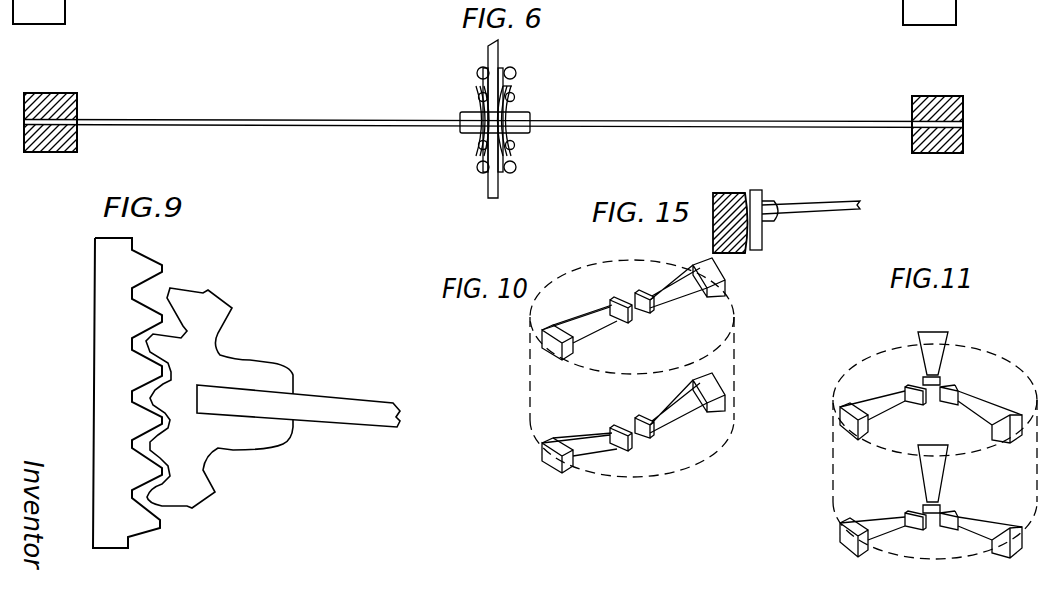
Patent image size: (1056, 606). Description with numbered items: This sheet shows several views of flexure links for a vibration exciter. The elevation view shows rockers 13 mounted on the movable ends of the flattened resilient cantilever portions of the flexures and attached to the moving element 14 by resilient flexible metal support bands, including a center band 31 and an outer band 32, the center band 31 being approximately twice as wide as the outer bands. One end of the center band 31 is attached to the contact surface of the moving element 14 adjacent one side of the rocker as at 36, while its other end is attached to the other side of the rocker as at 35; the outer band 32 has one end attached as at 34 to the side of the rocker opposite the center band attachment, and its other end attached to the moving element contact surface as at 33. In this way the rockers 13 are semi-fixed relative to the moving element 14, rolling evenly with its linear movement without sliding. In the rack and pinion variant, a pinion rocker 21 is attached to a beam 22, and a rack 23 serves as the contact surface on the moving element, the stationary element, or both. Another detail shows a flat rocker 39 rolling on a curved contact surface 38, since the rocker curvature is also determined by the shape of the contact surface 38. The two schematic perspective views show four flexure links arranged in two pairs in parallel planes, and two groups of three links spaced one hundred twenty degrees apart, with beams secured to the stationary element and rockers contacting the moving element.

In FIG. 6, the rockers 13 is at (477, 107).
In FIG. 6, the moving element 14 is at (500, 55).
In FIG. 9, the pinion rocker 21 is at (205, 343).
In FIG. 9, the beam 22 is at (325, 403).
In FIG. 9, the rack 23 is at (103, 543).
In FIG. 6, the center support band 31 is at (512, 84).
In FIG. 6, the outer support band 32 is at (507, 162).
In FIG. 6, the attachment point of outer bands to moving element 33 is at (505, 166).
In FIG. 6, the attachment point of outer bands to rocker 34 is at (514, 92).
In FIG. 6, the attachment point of center band to rocker 35 is at (512, 145).
In FIG. 6, the attachment point of center band to moving element 36 is at (504, 72).
In FIG. 15, the contact surface 38 is at (738, 200).
In FIG. 15, the rocker 39 is at (765, 236).